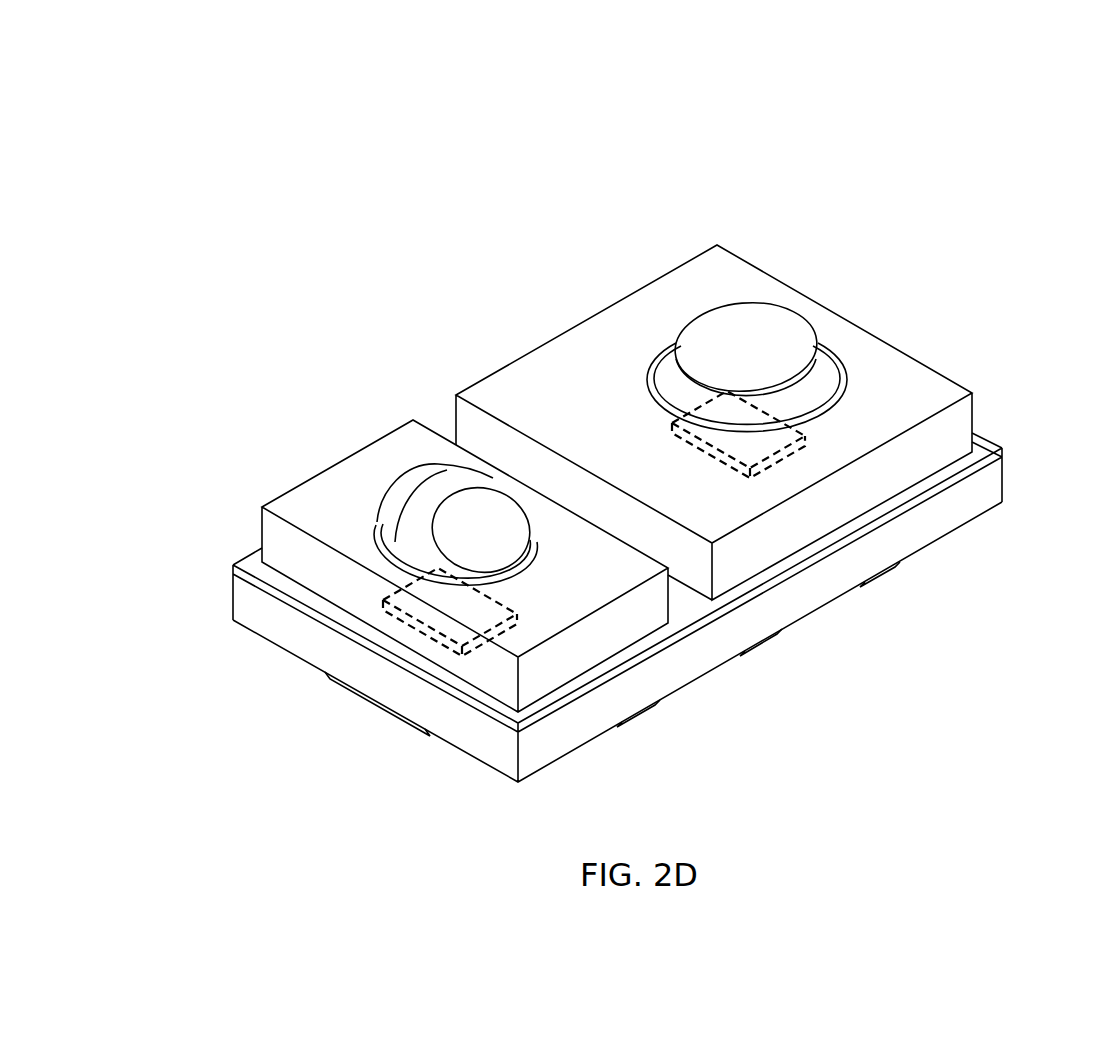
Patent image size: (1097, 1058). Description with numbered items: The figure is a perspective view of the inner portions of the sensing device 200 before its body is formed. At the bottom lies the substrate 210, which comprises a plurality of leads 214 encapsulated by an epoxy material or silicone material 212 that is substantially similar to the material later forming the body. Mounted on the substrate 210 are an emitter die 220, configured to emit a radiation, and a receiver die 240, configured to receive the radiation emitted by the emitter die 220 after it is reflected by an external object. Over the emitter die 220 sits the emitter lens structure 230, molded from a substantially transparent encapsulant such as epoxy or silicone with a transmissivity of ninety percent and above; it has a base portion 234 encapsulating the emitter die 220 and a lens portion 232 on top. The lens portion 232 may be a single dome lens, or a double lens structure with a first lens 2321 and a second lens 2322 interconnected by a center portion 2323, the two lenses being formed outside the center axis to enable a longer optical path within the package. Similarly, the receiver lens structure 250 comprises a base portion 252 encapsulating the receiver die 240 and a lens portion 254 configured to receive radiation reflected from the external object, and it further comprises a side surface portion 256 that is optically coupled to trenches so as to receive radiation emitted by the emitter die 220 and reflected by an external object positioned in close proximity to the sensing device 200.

The sensing device 200 is at (376, 187).
The substrate 210 is at (920, 627).
The epoxy material or silicone material 212 is at (795, 600).
The leads 214 is at (752, 655).
The emitter die 220 is at (402, 628).
The emitter lens structure 230 is at (258, 340).
The lens portion 232 is at (418, 488).
The first lens 2321 is at (466, 517).
The second lens 2322 is at (378, 519).
The center portion 2323 is at (452, 487).
The base portion 234 is at (406, 431).
The receiver die 240 is at (780, 465).
The receiver lens structure 250 is at (1002, 162).
The base portion 252 is at (863, 386).
The lens portion 254 is at (762, 338).
The side surface portion 256 is at (823, 362).